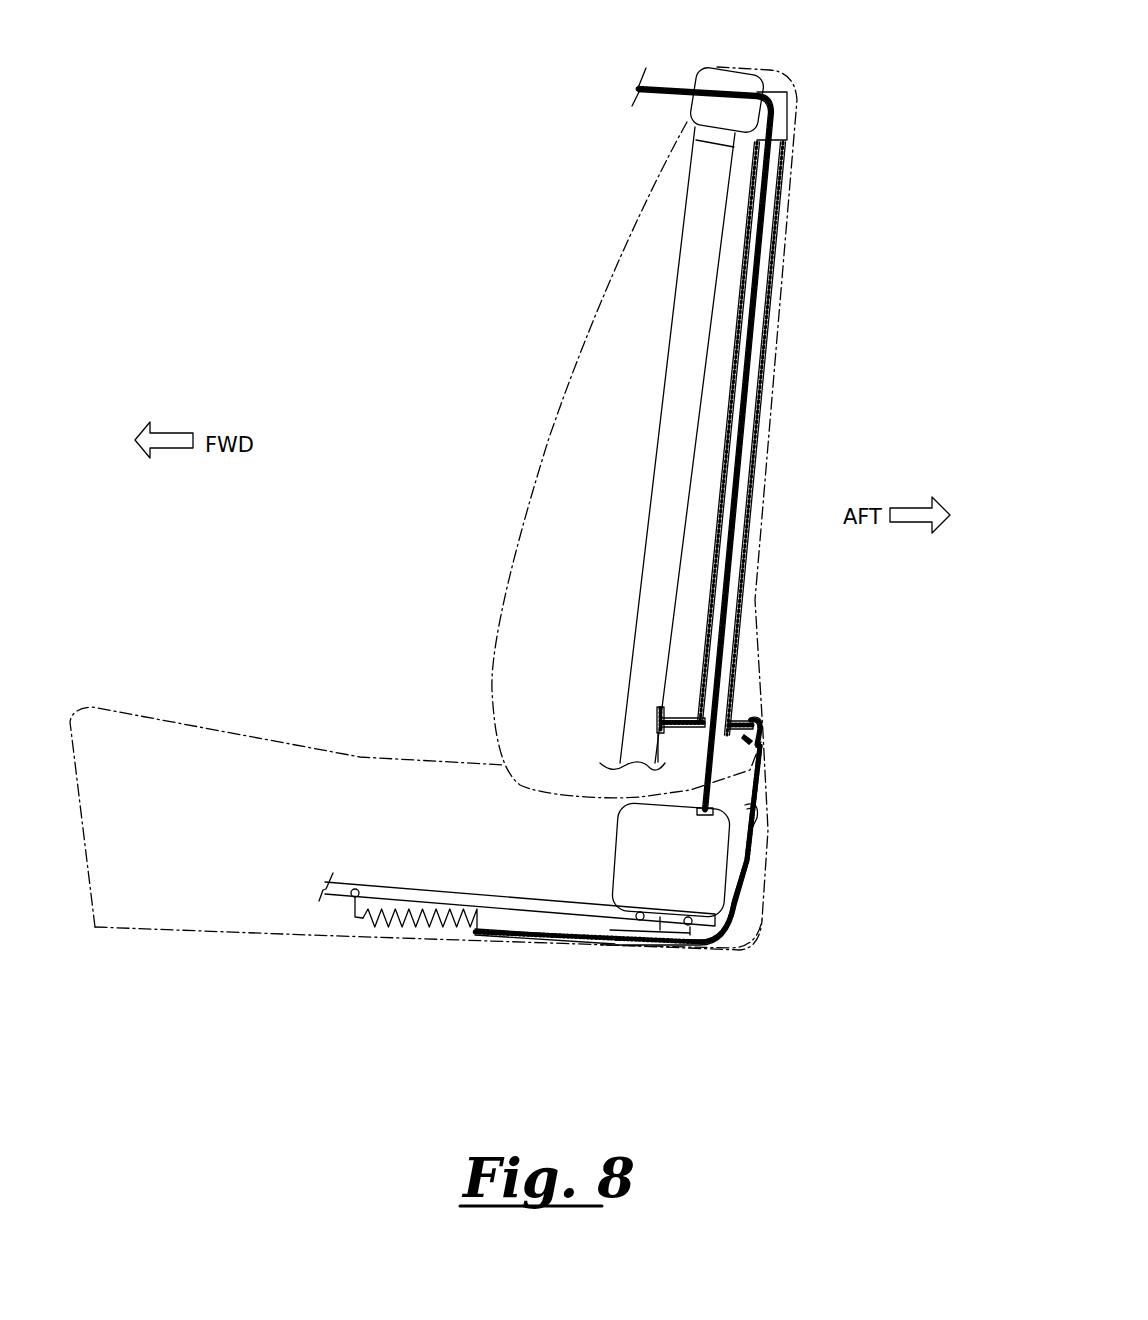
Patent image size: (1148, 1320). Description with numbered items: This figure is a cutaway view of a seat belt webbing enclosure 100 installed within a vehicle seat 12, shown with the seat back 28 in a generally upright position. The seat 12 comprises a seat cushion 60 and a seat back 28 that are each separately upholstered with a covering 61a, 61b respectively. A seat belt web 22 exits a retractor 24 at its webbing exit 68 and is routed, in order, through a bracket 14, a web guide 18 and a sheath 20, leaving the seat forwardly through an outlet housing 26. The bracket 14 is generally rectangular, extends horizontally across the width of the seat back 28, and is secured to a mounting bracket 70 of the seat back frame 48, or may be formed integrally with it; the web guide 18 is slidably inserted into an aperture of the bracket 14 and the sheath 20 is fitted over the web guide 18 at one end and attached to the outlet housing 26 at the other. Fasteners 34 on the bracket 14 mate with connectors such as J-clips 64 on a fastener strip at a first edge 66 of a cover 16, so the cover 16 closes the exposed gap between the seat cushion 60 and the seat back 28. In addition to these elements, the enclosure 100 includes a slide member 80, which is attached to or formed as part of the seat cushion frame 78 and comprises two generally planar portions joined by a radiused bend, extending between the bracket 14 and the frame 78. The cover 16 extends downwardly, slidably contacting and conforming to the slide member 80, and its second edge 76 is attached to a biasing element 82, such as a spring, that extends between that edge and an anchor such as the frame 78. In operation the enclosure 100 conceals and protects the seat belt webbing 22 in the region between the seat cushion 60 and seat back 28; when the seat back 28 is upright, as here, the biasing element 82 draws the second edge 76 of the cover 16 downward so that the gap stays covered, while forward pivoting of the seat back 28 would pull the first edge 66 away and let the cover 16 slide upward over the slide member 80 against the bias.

The seat belt webbing enclosure 100 is at (423, 233).
The vehicle seat 12 is at (407, 612).
The outlet housing 26 is at (694, 88).
The seat back 28 is at (651, 196).
The seat back frame 48 is at (678, 294).
The covering 61b is at (549, 438).
The bracket 14 is at (682, 717).
The web guide 18 is at (733, 712).
The sheath 20 is at (740, 640).
The first edge 66 is at (758, 721).
The mounting bracket 70 is at (661, 746).
The fasteners 34 is at (757, 741).
The J-clips 64 is at (747, 739).
The seat belt web 22 is at (700, 792).
The webbing exit 68 is at (712, 817).
The retractor 24 is at (612, 882).
The seat cushion frame 78 is at (472, 898).
The cover 16 is at (747, 888).
The slide member 80 is at (730, 905).
The biasing element 82 is at (410, 928).
The second edge 76 is at (473, 933).
The seat cushion 60 is at (338, 755).
The covering 61a is at (187, 930).